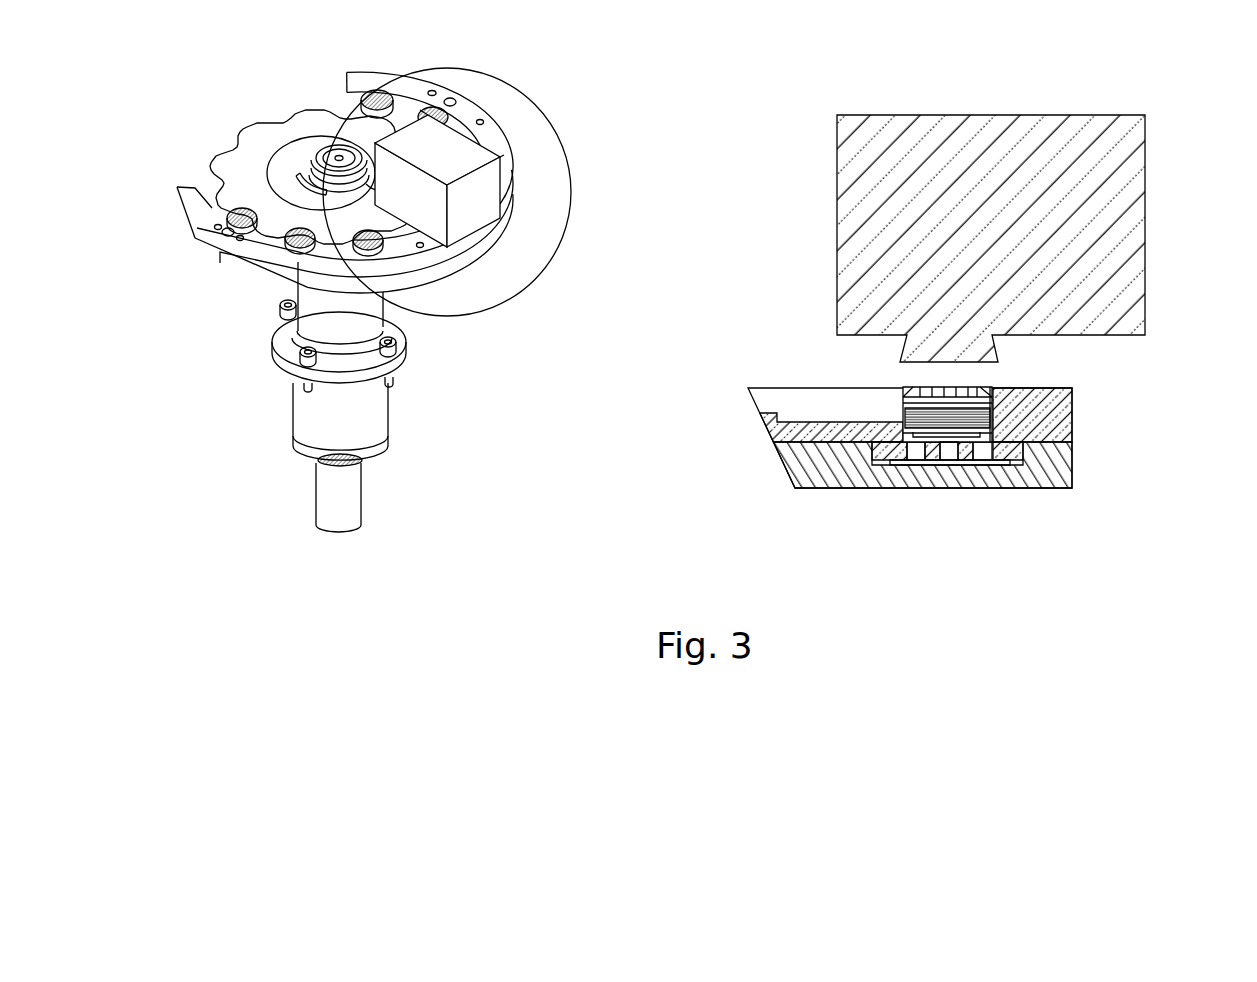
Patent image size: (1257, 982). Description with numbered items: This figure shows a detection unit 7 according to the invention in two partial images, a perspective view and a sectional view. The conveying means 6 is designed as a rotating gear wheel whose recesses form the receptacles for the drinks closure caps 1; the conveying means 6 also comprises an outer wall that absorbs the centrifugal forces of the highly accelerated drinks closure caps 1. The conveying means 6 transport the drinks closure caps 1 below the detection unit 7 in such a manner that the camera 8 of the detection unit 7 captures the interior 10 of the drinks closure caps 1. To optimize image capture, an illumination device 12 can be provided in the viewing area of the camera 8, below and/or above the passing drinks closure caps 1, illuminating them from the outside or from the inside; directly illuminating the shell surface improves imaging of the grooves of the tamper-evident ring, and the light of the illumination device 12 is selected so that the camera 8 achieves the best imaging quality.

The drinks closure caps 1 is at (385, 95).
The conveying means 6 is at (293, 125).
The detection unit 7 is at (478, 214).
The camera 8 is at (1087, 258).
The interior 10 is at (898, 405).
The illumination device 12 is at (953, 452).